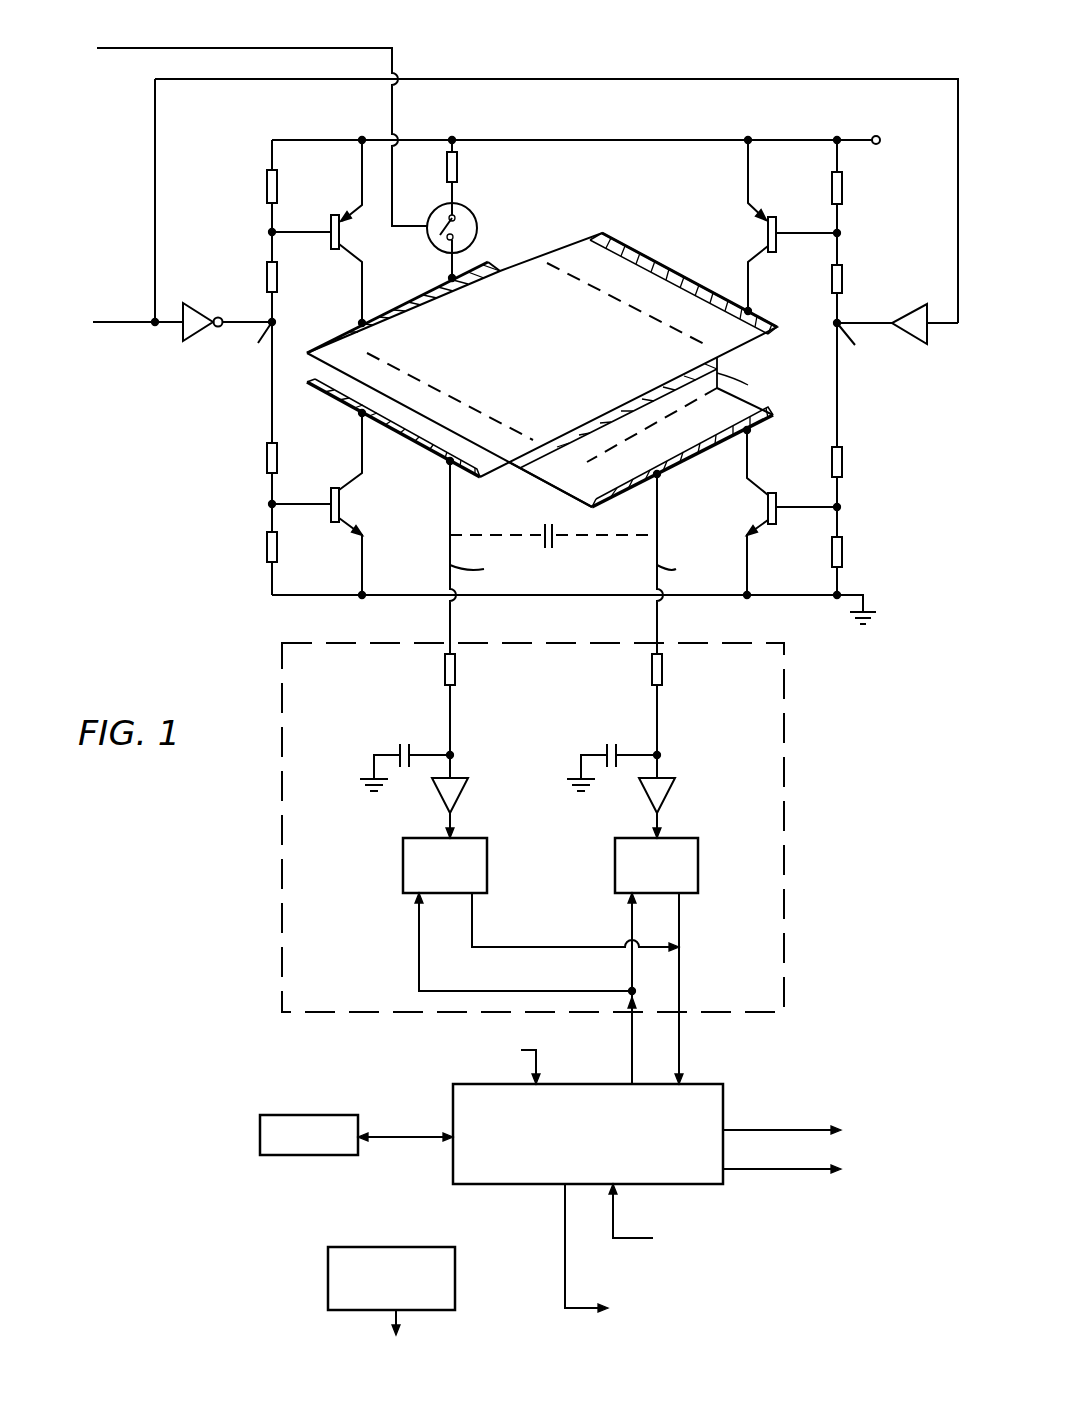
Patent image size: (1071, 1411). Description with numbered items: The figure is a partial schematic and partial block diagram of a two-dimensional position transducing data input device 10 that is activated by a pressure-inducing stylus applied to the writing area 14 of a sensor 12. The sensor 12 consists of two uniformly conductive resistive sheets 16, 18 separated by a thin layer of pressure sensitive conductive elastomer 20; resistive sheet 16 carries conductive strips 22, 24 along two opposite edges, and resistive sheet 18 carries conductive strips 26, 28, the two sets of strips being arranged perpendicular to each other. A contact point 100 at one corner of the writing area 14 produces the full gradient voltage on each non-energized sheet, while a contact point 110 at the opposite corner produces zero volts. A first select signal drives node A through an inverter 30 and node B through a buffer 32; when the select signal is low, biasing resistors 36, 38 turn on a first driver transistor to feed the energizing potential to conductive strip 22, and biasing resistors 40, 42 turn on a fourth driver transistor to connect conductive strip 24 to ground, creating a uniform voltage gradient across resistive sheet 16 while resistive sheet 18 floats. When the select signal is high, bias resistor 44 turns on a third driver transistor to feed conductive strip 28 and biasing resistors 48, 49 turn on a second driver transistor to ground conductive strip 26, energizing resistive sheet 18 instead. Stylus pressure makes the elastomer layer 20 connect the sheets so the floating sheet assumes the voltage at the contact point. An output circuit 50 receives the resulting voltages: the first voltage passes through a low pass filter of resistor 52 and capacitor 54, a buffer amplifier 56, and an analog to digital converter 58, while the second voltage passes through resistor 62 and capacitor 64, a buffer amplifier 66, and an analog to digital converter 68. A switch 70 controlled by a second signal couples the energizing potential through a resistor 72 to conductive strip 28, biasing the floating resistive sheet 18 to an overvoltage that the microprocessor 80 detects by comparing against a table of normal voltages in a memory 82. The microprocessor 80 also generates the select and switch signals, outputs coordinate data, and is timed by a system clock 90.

The data input device 10 is at (566, 67).
The sensor 12 is at (542, 251).
The writing area 14 is at (560, 388).
The resistive sheet 16 is at (558, 370).
The resistive sheet 18 is at (752, 399).
The pressure sensitive conductive elastomer layer 20 is at (540, 458).
The conductive strip 22 is at (762, 311).
The conductive strip 24 is at (333, 388).
The conductive strip 26 is at (760, 418).
The conductive strip 28 is at (490, 266).
The inverter 30 is at (188, 341).
The buffer 32 is at (893, 316).
The biasing resistor 36 is at (831, 190).
The biasing resistor 38 is at (843, 283).
The biasing resistor 40 is at (266, 460).
The biasing resistor 42 is at (266, 551).
The bias resistor 44 is at (266, 190).
The biasing resistor 48 is at (843, 458).
The biasing resistor 49 is at (843, 552).
The output circuit 50 is at (317, 642).
The resistor 52 is at (652, 670).
The capacitor 54 is at (606, 749).
The buffer amplifier 56 is at (648, 798).
The analog to digital converter 58 is at (615, 860).
The resistor 62 is at (445, 670).
The capacitor 64 is at (398, 749).
The buffer amplifier 66 is at (441, 798).
The analog to digital converter 68 is at (403, 860).
The switch 70 is at (477, 228).
The resistor 72 is at (458, 170).
The microprocessor 80 is at (499, 1186).
The memory 82 is at (348, 1113).
The system clock 90 is at (455, 1272).
The contact point 100 is at (786, 334).
The contact point 110 is at (548, 440).